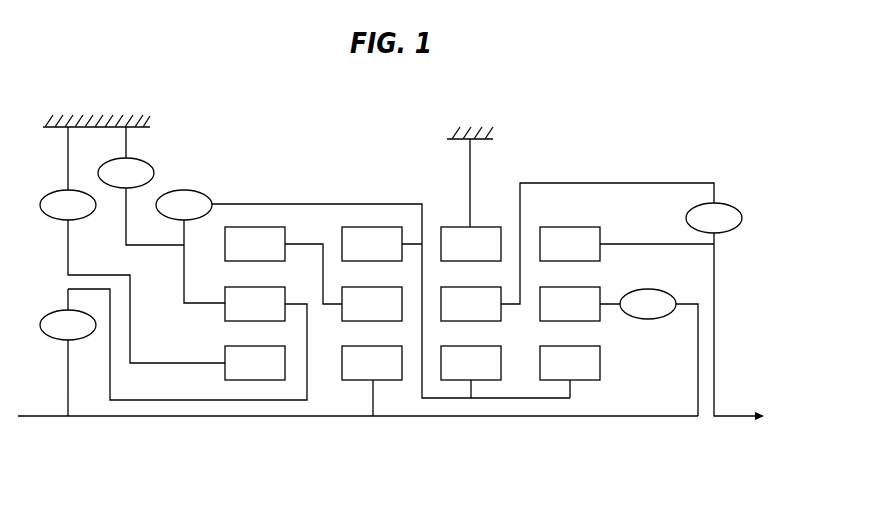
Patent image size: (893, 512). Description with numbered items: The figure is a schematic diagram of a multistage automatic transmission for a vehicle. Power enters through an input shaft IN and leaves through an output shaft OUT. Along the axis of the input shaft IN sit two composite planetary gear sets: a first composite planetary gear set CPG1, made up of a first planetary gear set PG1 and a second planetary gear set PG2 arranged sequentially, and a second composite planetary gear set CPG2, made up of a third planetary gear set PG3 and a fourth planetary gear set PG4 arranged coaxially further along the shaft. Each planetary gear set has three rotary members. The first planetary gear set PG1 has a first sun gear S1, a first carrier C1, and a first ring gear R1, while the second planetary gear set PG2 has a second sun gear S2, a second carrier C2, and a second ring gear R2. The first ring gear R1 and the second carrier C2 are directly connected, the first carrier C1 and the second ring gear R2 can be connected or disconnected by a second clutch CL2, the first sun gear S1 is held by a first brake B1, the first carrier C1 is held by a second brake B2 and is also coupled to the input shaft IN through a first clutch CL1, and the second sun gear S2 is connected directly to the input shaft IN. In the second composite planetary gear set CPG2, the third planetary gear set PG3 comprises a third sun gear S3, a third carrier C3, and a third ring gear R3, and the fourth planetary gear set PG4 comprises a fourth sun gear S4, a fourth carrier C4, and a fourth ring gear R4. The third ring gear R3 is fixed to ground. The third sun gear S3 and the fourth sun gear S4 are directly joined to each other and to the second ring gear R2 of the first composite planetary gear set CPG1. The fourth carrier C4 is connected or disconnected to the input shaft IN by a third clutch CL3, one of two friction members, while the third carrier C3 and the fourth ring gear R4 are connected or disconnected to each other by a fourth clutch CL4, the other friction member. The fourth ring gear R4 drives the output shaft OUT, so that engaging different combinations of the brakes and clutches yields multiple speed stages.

The input shaft IN is at (358, 404).
The output shaft OUT is at (741, 326).
The first brake B1 is at (132, 245).
The second brake B2 is at (141, 186).
The first clutch CL1 is at (173, 352).
The second clutch CL2 is at (363, 294).
The third clutch CL3 is at (649, 352).
The fourth clutch CL4 is at (621, 243).
The first composite planetary gear set CPG1 is at (262, 136).
The second composite planetary gear set CPG2 is at (503, 470).
The first planetary gear set PG1 is at (252, 212).
The second planetary gear set PG2 is at (376, 212).
The third planetary gear set PG3 is at (488, 390).
The fourth planetary gear set PG4 is at (587, 390).
The first ring gear R1 is at (255, 244).
The first carrier C1 is at (255, 304).
The first sun gear S1 is at (255, 363).
The second ring gear R2 is at (372, 244).
The second carrier C2 is at (372, 304).
The second sun gear S2 is at (372, 363).
The third ring gear R3 is at (471, 244).
The third carrier C3 is at (471, 304).
The third sun gear S3 is at (471, 363).
The fourth ring gear R4 is at (570, 244).
The fourth carrier C4 is at (570, 304).
The fourth sun gear S4 is at (570, 363).